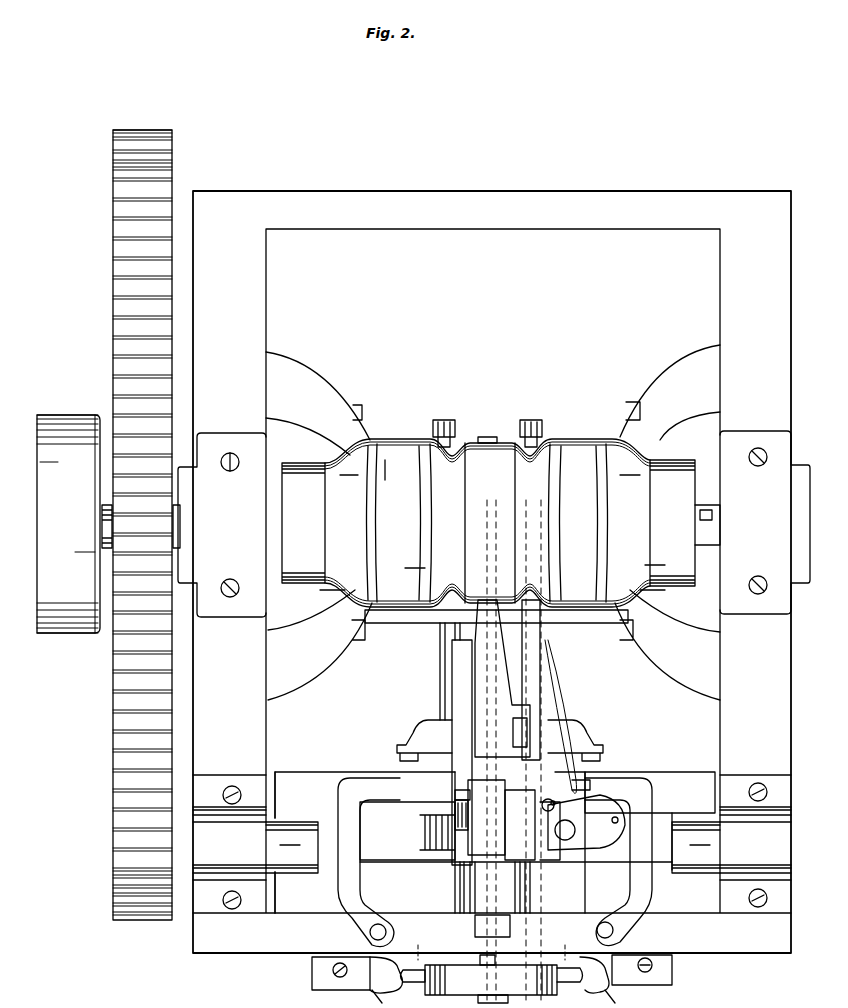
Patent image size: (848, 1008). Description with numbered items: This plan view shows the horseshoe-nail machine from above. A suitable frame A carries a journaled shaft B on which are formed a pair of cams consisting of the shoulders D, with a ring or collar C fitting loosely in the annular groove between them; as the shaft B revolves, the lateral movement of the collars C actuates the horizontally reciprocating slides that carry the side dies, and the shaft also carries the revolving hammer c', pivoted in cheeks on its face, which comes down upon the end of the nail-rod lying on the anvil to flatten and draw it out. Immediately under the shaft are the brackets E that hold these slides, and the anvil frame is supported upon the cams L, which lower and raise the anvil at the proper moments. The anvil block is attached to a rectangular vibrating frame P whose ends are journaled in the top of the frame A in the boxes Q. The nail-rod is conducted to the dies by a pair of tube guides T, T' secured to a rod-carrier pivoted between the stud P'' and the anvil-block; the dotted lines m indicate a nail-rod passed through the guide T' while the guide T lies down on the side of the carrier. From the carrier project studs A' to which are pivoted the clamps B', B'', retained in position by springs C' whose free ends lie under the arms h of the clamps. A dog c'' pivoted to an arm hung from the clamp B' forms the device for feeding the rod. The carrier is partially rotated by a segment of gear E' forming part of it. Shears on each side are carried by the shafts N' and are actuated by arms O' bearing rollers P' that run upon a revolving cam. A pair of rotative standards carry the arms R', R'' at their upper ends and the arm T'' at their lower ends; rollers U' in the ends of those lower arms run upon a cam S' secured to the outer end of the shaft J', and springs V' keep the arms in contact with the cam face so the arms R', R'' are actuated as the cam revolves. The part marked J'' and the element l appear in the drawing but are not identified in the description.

The frame A is at (494, 572).
The gear wheel J'' is at (142, 525).
The shaft B is at (378, 524).
The ring or collar C is at (488, 513).
The shoulders D is at (502, 514).
The dotted lines indicating nail-rod m is at (509, 750).
The brackets E is at (493, 522).
The cams L is at (494, 598).
The shafts N' is at (439, 671).
The springs C' is at (514, 752).
The guide T' is at (502, 678).
The guide T is at (526, 680).
The arms O' is at (497, 732).
The rollers P' is at (494, 741).
The rectangular vibrating frame P is at (473, 842).
The segment of gear E' is at (460, 831).
The arm R' is at (369, 862).
The arm R'' is at (618, 862).
The revolving hammer c' is at (487, 924).
The boxes Q is at (493, 847).
The arms of the clamps h is at (522, 789).
The studs A' is at (462, 814).
The clamp B' is at (486, 817).
The lever l is at (520, 825).
The clamp B'' is at (586, 822).
The dog c'' is at (553, 819).
The stud P'' is at (495, 899).
The rollers U' is at (492, 956).
The cam S' is at (491, 980).
The shaft J' is at (493, 977).
The arm T'' is at (489, 975).
The springs V' is at (499, 999).